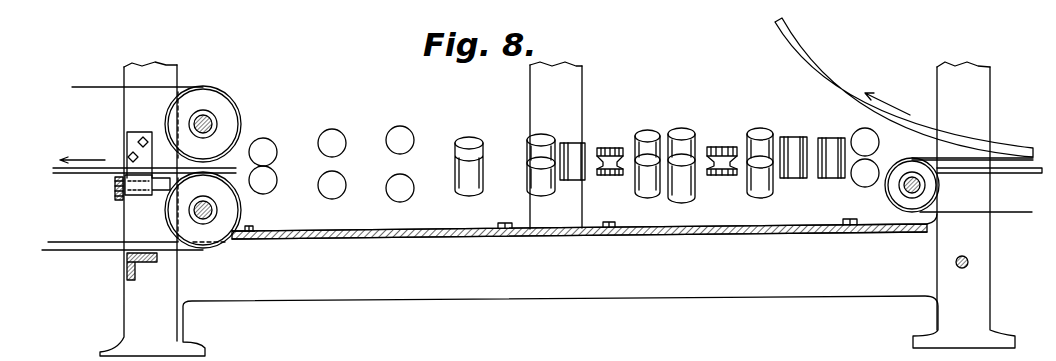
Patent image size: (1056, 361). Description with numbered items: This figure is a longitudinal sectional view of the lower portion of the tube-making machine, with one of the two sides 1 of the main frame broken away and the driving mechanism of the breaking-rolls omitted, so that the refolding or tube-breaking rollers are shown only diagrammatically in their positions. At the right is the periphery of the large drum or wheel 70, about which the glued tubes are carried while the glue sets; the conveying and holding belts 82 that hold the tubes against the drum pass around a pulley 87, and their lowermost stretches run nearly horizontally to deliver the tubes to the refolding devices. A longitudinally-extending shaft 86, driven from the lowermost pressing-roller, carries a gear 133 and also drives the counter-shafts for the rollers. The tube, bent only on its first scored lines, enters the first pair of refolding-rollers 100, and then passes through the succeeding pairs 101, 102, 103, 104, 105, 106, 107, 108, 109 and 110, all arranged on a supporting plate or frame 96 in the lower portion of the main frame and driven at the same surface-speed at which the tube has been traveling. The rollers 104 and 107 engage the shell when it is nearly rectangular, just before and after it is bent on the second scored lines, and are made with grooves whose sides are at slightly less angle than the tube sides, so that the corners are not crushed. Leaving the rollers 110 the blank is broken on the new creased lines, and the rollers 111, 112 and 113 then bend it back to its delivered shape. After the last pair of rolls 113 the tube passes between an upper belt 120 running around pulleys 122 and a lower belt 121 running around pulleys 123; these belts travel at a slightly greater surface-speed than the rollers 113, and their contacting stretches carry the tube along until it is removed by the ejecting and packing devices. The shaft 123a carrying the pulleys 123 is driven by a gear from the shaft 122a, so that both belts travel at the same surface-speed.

The sides of the main frame 1 is at (674, 257).
The large drum or wheel 70 is at (836, 81).
The conveying and holding belts 82 is at (927, 162).
The longitudinally-extending shaft 86 is at (1017, 174).
The pulley 87 is at (898, 197).
The supporting plate or frame 96 is at (584, 226).
The first pair of refolding-rollers 100 is at (866, 150).
The pair of refolding-rollers 101 is at (833, 150).
The pair of refolding-rollers 102 is at (795, 150).
The pair of refolding-rollers 103 is at (762, 154).
The grooved refolding-rollers 104 is at (723, 151).
The pair of refolding-rollers 105 is at (684, 154).
The pair of refolding-rollers 106 is at (649, 126).
The grooved refolding-rollers 107 is at (613, 151).
The pair of refolding-rollers 108 is at (571, 143).
The pair of refolding-rollers 109 is at (539, 136).
The pair of refolding-rollers 110 is at (474, 137).
The pair of refolding-rollers 111 is at (400, 128).
The pair of refolding-rollers 112 is at (335, 154).
The last pair of refolding-rollers 113 is at (268, 142).
The upper belt 120 is at (92, 84).
The lower belt 121 is at (89, 175).
The driving-pulleys 122 is at (216, 103).
The shaft 122a is at (213, 119).
The pulleys 123 is at (228, 214).
The shaft 123a is at (212, 208).
The gear 133 is at (115, 201).